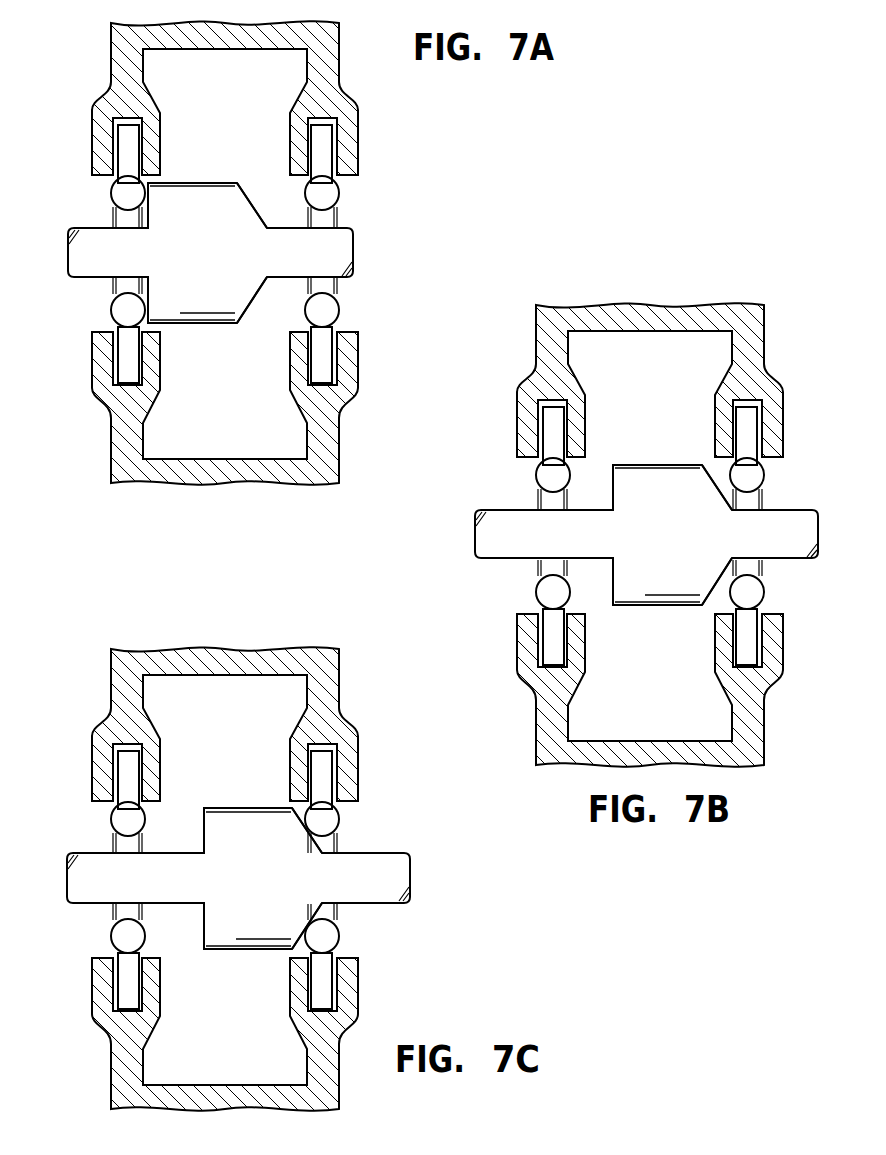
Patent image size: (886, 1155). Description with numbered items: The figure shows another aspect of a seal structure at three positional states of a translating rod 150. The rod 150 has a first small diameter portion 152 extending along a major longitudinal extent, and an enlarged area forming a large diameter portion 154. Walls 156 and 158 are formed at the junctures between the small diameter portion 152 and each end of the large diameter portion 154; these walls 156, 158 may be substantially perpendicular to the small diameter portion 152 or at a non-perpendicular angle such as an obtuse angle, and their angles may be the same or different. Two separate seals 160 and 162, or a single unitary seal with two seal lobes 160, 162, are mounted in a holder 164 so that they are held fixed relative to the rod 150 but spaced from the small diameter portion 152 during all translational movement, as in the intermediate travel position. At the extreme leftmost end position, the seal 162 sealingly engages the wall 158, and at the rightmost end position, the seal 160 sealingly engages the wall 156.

In FIG. 7A, the rod 150 is at (324, 251).
In FIG. 7B, the rod 150 is at (519, 542).
In FIG. 7C, the rod 150 is at (372, 877).
In FIG. 7A, the small diameter portion 152 is at (330, 228).
In FIG. 7B, the small diameter portion 152 is at (768, 513).
In FIG. 7C, the small diameter portion 152 is at (388, 853).
In FIG. 7A, the large diameter portion 154 is at (222, 183).
In FIG. 7B, the large diameter portion 154 is at (660, 466).
In FIG. 7C, the large diameter portion 154 is at (257, 808).
In FIG. 7A, the wall 156 is at (264, 222).
In FIG. 7B, the wall 156 is at (720, 589).
In FIG. 7C, the wall 156 is at (343, 847).
In FIG. 7A, the wall 158 is at (135, 225).
In FIG. 7B, the wall 158 is at (556, 571).
In FIG. 7C, the wall 158 is at (205, 848).
In FIG. 7A, the seal 160 is at (343, 193).
In FIG. 7B, the seal 160 is at (764, 481).
In FIG. 7C, the seal 160 is at (344, 822).
In FIG. 7A, the seal 162 is at (113, 192).
In FIG. 7B, the seal 162 is at (543, 473).
In FIG. 7C, the seal 162 is at (113, 819).
In FIG. 7A, the holder 164 is at (330, 66).
In FIG. 7B, the holder 164 is at (755, 331).
In FIG. 7C, the holder 164 is at (330, 668).